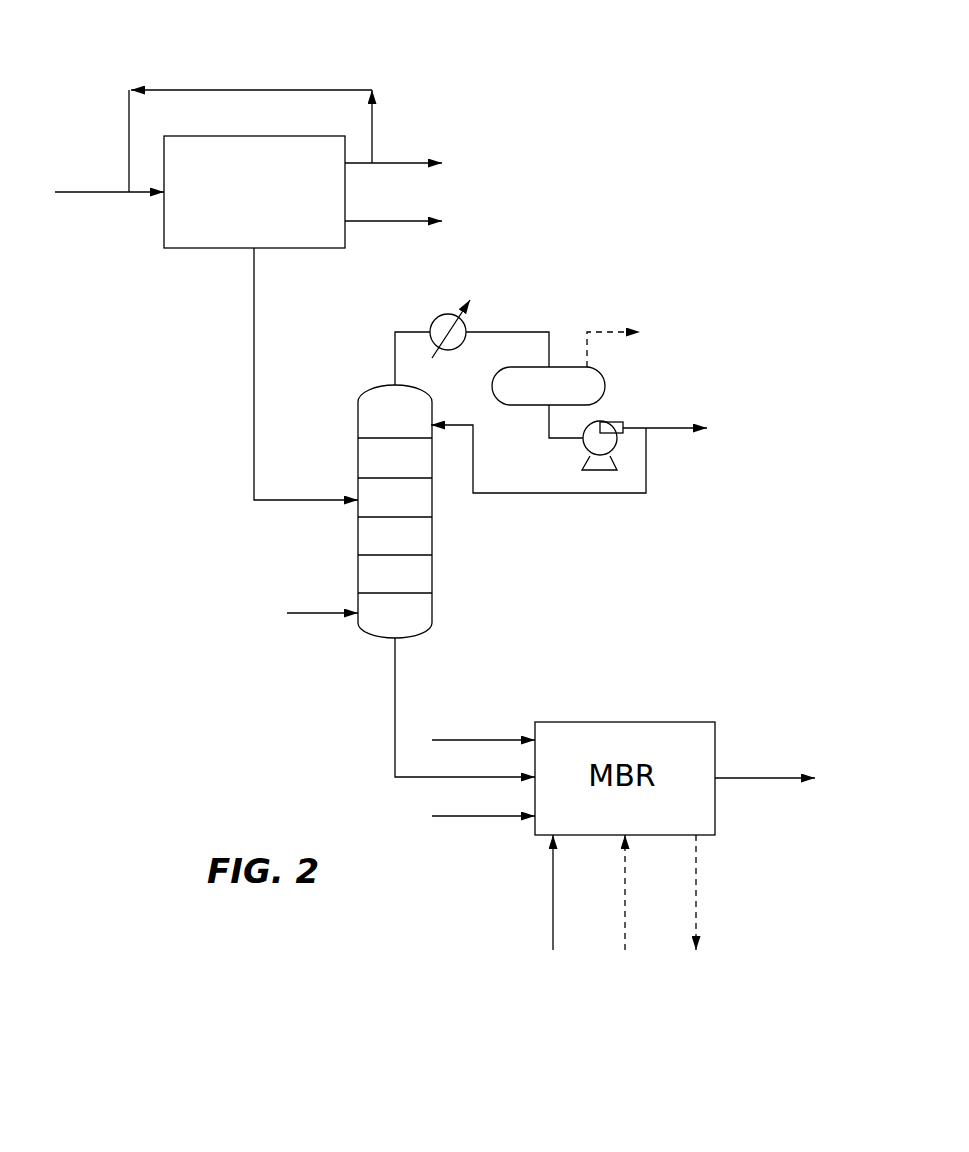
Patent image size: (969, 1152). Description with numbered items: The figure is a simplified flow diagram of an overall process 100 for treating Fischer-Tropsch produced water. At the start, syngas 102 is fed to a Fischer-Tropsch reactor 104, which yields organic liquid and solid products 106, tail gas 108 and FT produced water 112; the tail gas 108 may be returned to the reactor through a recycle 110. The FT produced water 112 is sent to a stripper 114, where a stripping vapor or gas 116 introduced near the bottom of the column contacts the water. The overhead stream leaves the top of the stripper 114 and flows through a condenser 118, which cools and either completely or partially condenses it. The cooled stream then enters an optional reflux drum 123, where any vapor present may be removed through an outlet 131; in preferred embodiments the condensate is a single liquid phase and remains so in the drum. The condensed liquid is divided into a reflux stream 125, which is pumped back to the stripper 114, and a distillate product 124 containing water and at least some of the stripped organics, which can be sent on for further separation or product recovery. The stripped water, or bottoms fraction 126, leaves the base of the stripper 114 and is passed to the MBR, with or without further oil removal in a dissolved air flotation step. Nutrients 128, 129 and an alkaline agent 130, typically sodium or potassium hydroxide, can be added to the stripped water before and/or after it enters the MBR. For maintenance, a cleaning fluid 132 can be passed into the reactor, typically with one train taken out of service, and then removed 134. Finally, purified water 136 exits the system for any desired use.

The overall process 100 is at (550, 195).
The syngas 102 is at (87, 192).
The Fischer-Tropsch reactor 104 is at (244, 215).
The organic liquid and solid products 106 is at (383, 221).
The tail gas 108 is at (403, 163).
The recycle 110 is at (244, 90).
The FT produced water 112 is at (252, 362).
The stripper 114 is at (417, 570).
The stripping vapor or gas 116 is at (310, 613).
The condenser 118 is at (466, 327).
The reflux drum 123 is at (597, 368).
The distillate product 124 is at (668, 428).
The reflux stream 125 is at (558, 493).
The bottoms fraction 126 is at (393, 695).
The nutrients 128 is at (473, 816).
The nutrients 129 is at (550, 893).
The alkaline agent 130 is at (475, 740).
The outlet 131 is at (612, 332).
The cleaning fluid 132 is at (625, 907).
The cleaning fluid removal 134 is at (696, 888).
The purified water 136 is at (782, 778).